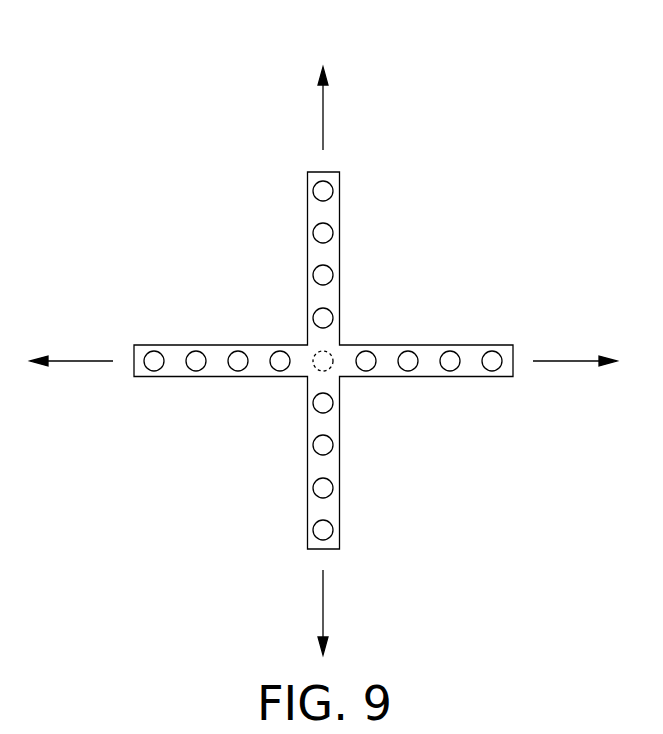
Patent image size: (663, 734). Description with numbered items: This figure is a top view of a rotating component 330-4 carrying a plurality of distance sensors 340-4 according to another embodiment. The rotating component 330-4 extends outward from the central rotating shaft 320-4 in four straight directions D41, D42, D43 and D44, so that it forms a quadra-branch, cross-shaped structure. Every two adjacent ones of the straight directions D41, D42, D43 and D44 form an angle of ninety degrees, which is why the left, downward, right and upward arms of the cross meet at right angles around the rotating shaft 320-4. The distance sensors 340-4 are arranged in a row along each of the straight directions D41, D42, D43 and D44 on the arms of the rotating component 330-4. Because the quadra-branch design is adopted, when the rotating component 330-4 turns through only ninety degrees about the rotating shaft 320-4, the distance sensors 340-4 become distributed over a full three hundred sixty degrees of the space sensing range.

The rotating shaft 320-4 is at (332, 366).
The rotating component 330-4 is at (307, 525).
The distance sensors 340-4 is at (314, 488).
The straight direction D41 is at (73, 360).
The straight direction D42 is at (322, 610).
The straight direction D43 is at (567, 360).
The straight direction D44 is at (322, 108).